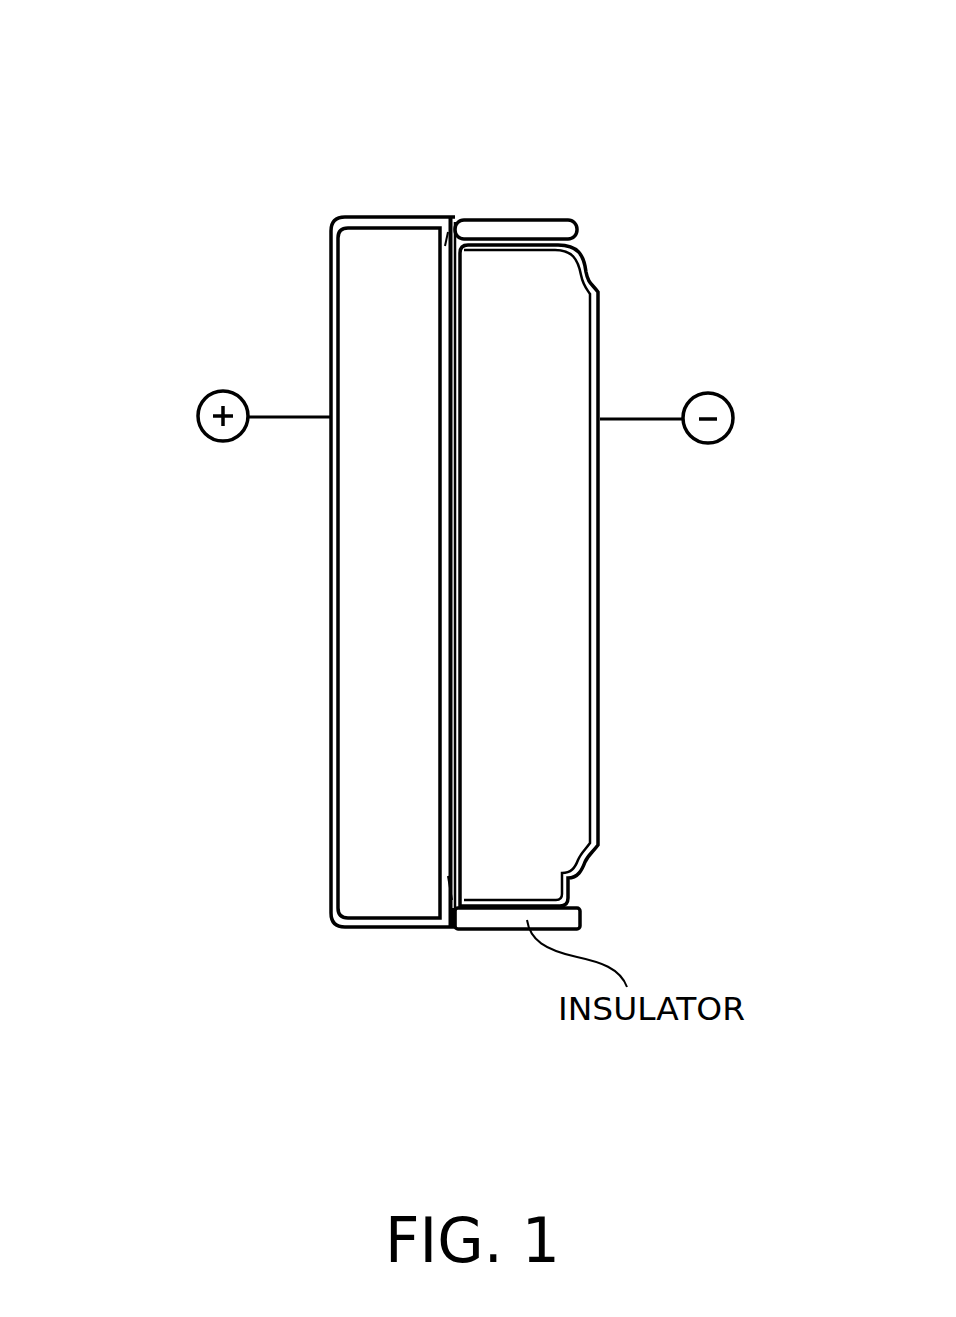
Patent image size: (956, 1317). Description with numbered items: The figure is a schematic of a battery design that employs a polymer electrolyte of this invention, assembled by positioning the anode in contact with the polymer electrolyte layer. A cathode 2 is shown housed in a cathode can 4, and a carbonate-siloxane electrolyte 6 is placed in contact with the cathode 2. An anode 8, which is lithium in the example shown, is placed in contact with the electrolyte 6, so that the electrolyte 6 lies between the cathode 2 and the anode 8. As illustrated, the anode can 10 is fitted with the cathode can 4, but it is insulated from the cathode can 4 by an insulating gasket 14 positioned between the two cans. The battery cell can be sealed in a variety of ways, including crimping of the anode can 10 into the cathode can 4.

The cathode 2 is at (370, 533).
The cathode can 4 is at (328, 847).
The carbonate-siloxane electrolyte 6 is at (442, 247).
The anode 8 is at (545, 530).
The anode can 10 is at (572, 882).
The insulating gasket 14 is at (452, 922).